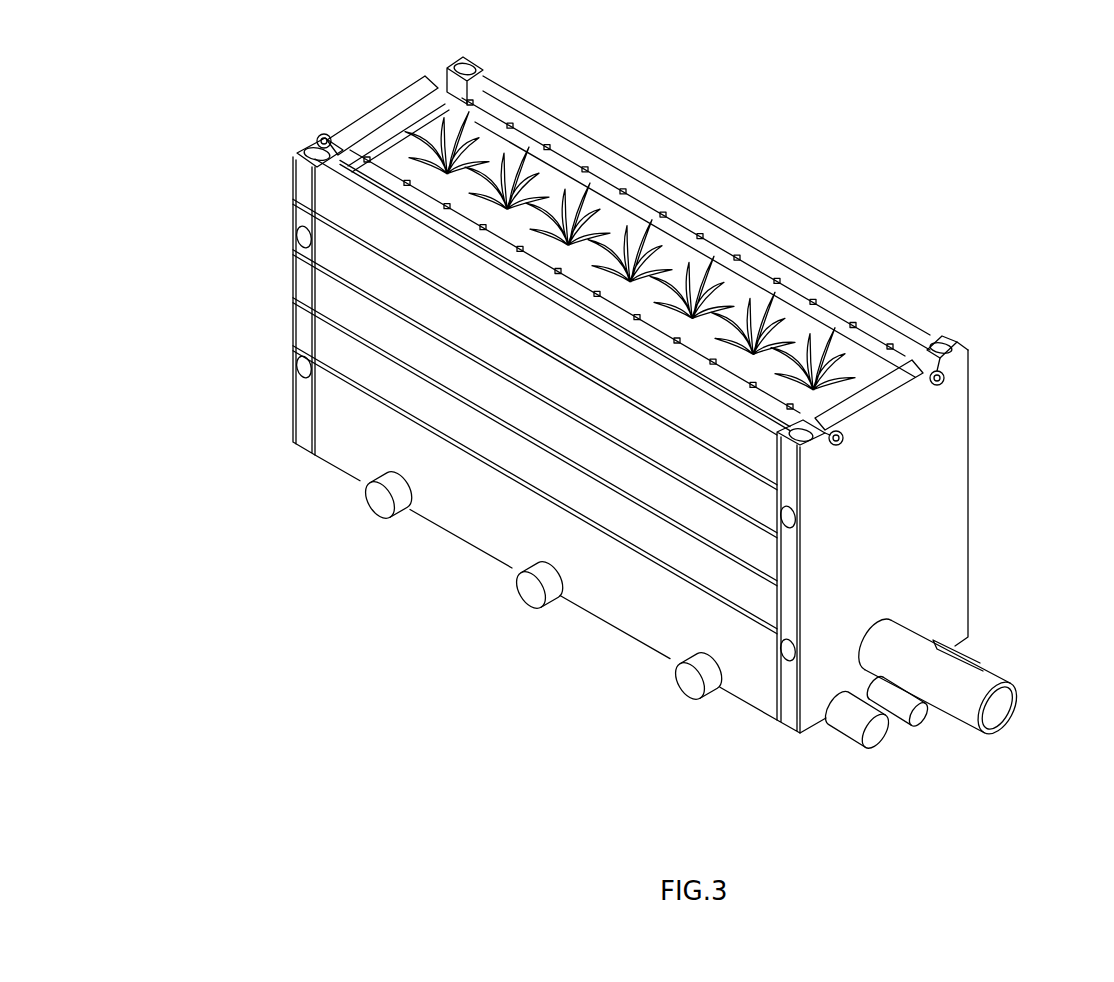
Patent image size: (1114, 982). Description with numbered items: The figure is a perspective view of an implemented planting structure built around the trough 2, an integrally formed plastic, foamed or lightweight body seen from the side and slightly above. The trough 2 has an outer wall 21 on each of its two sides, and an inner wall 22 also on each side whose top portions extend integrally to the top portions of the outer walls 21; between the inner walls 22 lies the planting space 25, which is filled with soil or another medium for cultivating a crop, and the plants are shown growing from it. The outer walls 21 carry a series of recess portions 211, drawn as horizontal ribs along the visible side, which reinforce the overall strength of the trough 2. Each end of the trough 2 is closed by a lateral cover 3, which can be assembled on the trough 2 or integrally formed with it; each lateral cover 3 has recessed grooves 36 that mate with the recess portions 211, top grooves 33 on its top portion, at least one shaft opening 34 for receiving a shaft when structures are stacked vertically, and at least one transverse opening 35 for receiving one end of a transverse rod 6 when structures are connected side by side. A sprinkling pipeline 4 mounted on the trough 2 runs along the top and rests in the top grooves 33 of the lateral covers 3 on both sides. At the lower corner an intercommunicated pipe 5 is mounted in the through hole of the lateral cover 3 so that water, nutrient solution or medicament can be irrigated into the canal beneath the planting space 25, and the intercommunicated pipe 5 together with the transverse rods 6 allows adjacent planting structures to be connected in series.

The trough 2 is at (698, 203).
The inner wall 22 is at (807, 270).
The planting space 25 is at (890, 333).
The sprinkling pipeline 4 is at (575, 128).
The lateral cover 3 is at (937, 527).
The outer wall 21 is at (500, 525).
The recess portion 211 is at (665, 572).
The top groove 33 is at (937, 372).
The shaft opening 34 is at (330, 137).
The transverse opening 35 is at (300, 372).
The recessed groove 36 is at (298, 210).
The intercommunicated pipe 5 is at (975, 690).
The transverse rod 6 is at (367, 495).